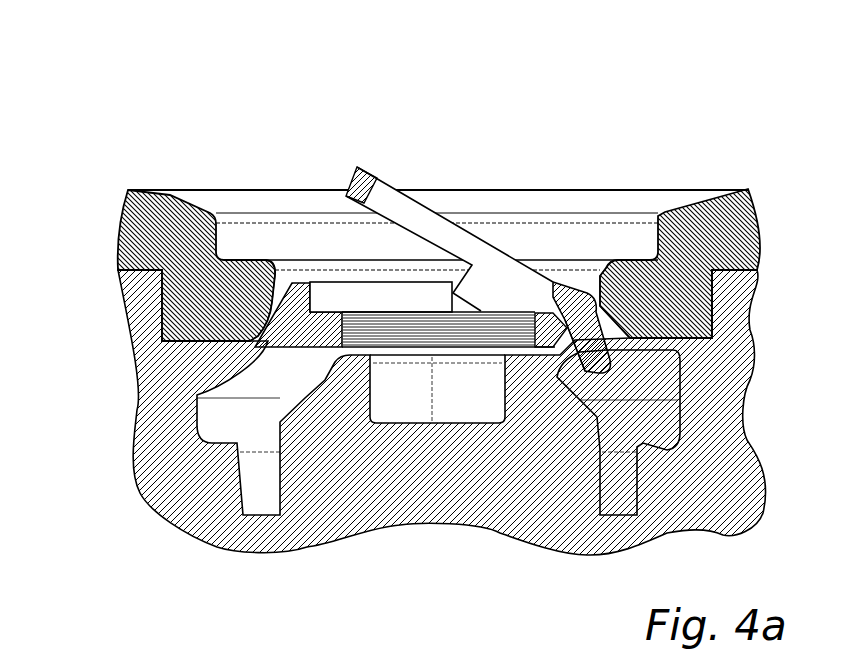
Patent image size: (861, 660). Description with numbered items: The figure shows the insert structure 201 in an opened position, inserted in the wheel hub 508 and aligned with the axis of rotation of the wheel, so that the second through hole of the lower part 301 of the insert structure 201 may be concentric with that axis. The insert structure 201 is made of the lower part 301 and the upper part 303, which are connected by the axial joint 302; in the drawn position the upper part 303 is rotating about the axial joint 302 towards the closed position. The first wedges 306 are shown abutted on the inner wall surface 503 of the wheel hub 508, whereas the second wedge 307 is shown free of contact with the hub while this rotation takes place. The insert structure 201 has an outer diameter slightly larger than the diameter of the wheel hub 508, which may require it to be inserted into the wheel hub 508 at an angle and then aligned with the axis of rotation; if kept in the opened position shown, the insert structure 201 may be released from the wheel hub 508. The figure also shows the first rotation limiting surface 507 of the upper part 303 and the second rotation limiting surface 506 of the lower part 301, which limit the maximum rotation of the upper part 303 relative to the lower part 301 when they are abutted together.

The insert structure 201 is at (504, 250).
The lower part 301 is at (327, 293).
The axial joint 302 is at (552, 300).
The upper part 303 is at (392, 198).
The first wedges 306 is at (200, 386).
The second wedge 307 is at (600, 350).
The inner wall surface 503 is at (258, 300).
The second rotation limiting surface 506 is at (545, 336).
The first rotation limiting surface 507 is at (566, 323).
The wheel hub 508 is at (147, 240).